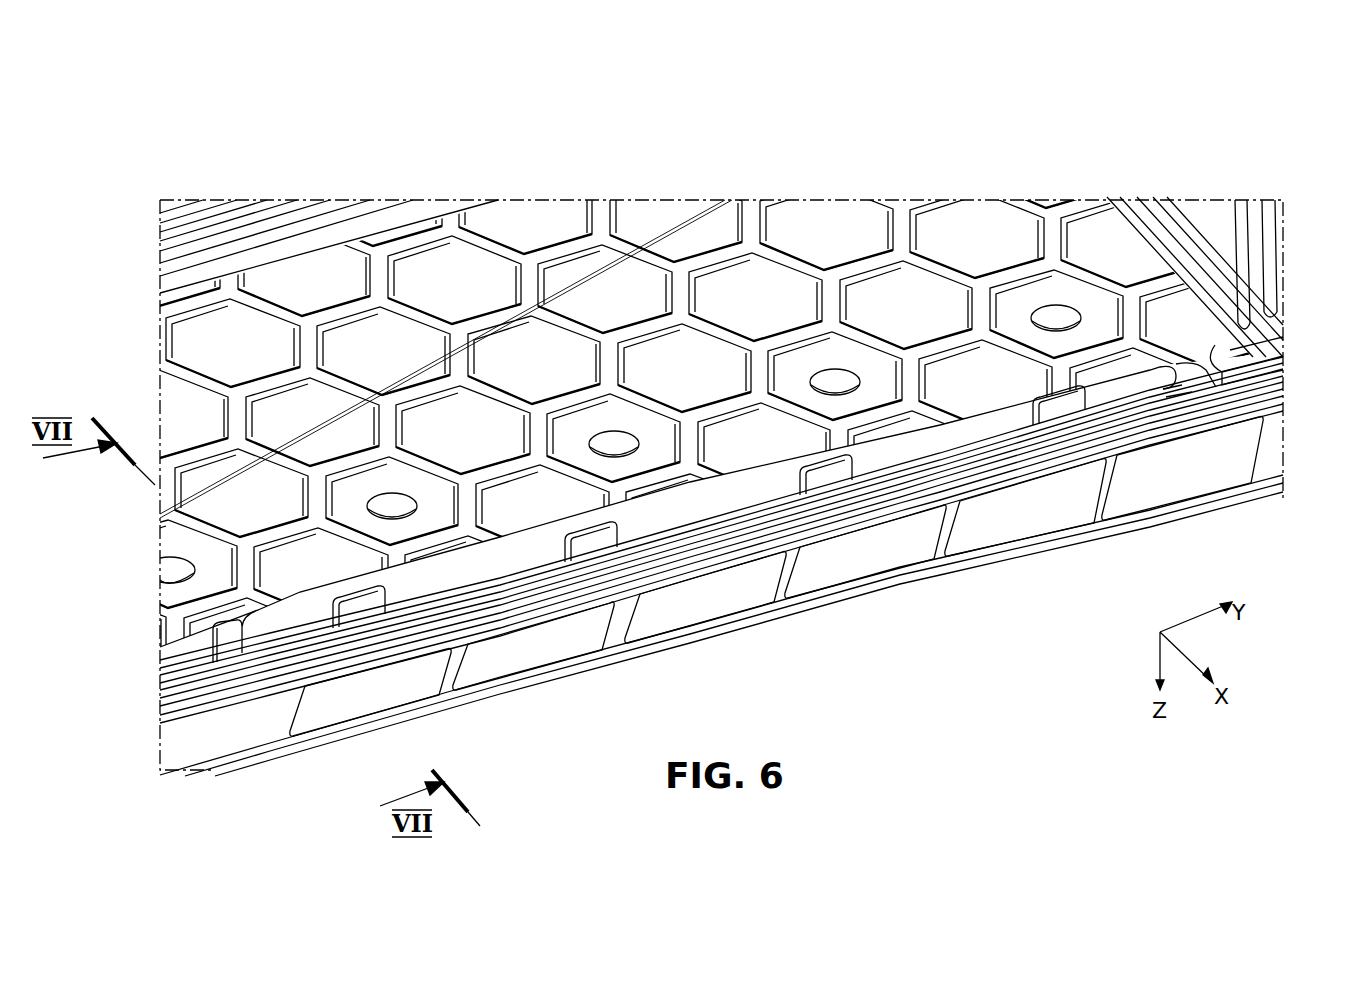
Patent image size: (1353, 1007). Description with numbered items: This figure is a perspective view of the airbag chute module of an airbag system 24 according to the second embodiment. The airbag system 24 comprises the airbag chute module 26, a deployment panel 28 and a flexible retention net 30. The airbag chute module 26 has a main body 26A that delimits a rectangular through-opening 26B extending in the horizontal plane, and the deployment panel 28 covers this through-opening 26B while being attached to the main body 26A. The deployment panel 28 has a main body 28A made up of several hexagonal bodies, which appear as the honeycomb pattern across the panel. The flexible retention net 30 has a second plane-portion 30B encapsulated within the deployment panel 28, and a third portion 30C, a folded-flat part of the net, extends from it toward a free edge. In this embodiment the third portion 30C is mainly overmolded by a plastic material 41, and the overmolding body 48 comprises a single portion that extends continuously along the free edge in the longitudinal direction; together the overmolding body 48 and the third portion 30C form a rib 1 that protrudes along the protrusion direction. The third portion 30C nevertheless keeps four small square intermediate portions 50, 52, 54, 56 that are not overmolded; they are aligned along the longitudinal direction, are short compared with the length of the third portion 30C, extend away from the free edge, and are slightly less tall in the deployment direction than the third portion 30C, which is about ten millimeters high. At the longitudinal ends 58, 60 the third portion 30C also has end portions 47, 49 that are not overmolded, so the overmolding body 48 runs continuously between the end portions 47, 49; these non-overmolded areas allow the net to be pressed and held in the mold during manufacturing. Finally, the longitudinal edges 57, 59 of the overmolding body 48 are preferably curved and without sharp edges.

The rib 1 is at (198, 653).
The airbag system 24 is at (925, 142).
The airbag chute module 26 is at (1132, 214).
The main body 26A is at (1206, 215).
The through-opening 26B is at (707, 215).
The deployment panel 28 is at (811, 228).
The main body 28A is at (853, 220).
The flexible retention net 30 is at (425, 478).
The second plane-portion 30B is at (245, 570).
The third portion 30C is at (500, 567).
The plastic material 41 is at (707, 512).
The end portion 47 is at (232, 650).
The overmolding body 48 is at (940, 453).
The end portion 49 is at (1198, 374).
The intermediate portion 50 is at (362, 612).
The intermediate portion 52 is at (597, 545).
The intermediate portion 54 is at (828, 480).
The intermediate portion 56 is at (1060, 415).
The longitudinal edge 57 is at (366, 640).
The longitudinal end 58 is at (193, 635).
The longitudinal edge 59 is at (1185, 392).
The longitudinal end 60 is at (1212, 367).